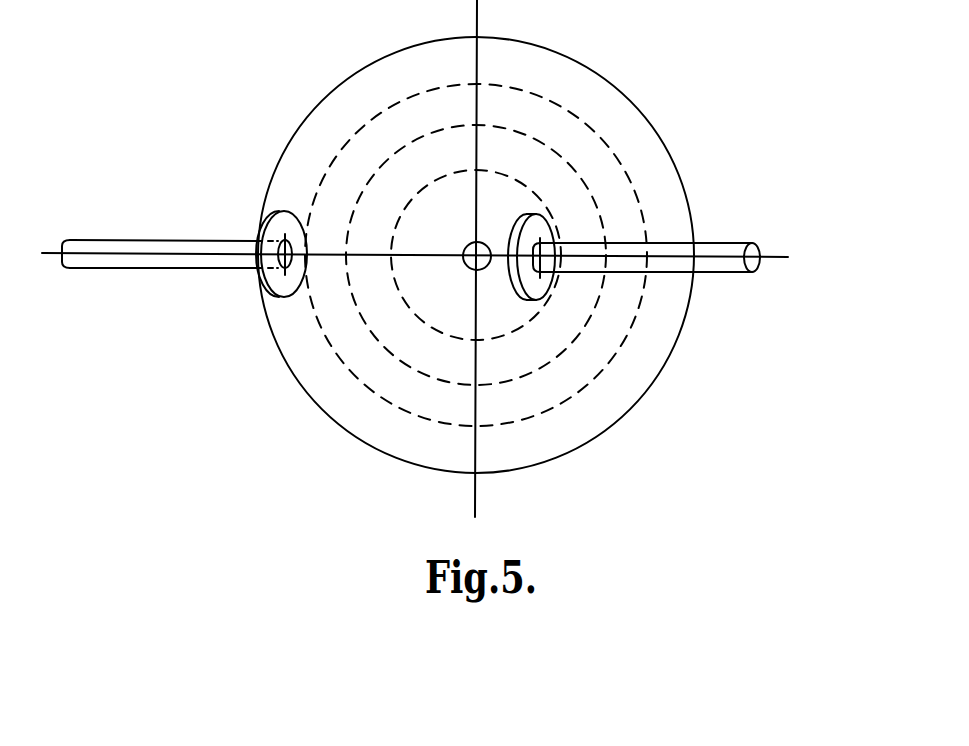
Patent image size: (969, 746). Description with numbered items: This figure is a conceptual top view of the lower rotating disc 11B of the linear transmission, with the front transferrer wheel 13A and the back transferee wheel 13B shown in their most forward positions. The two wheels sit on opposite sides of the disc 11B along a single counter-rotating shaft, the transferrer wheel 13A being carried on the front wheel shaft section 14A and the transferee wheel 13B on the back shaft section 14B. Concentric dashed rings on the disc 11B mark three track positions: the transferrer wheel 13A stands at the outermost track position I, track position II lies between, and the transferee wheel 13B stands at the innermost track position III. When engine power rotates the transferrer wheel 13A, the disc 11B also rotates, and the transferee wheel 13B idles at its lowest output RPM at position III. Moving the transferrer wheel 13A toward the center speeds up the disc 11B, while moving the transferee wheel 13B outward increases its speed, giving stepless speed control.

The lower rotating disc 11B is at (632, 100).
The front transferrer wheel 13A is at (277, 288).
The back transferee wheel 13B is at (553, 280).
The front wheel shaft section 14A is at (80, 240).
The back shaft section 14B is at (733, 243).
The track position I is at (476, 255).
The track position II is at (476, 261).
The track position III is at (476, 270).